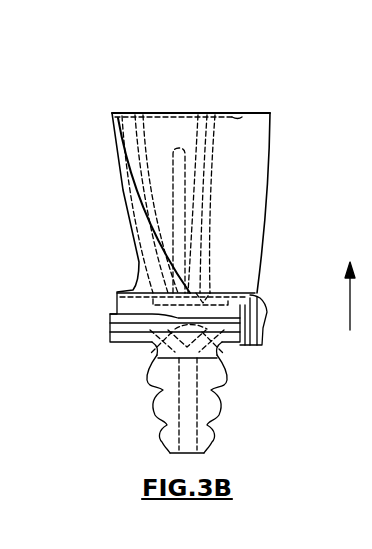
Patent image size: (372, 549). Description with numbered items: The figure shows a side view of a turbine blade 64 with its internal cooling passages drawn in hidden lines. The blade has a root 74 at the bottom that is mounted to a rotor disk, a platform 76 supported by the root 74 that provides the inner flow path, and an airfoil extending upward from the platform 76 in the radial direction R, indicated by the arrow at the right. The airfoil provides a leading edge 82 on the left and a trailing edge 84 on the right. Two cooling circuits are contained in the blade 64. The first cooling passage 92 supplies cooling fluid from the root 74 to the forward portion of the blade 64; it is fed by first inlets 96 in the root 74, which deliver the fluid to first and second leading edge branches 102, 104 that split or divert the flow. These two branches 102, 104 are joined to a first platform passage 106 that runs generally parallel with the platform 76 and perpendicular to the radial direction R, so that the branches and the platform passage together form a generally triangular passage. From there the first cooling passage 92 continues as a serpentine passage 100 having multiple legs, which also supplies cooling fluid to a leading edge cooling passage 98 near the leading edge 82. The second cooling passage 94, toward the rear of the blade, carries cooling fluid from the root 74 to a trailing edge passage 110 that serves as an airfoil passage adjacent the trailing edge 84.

The turbine blade 64 is at (100, 162).
The leading edge 82 is at (117, 138).
The trailing edge 84 is at (267, 157).
The first cooling passage 92 is at (126, 206).
The second cooling passage 94 is at (262, 212).
The leading edge cooling passage 98 is at (150, 237).
The serpentine passage 100 is at (162, 122).
The trailing edge passage 110 is at (247, 250).
The first platform passage 106 is at (114, 314).
The platform 76 is at (263, 310).
The first leading edge branch 102 is at (157, 350).
The second leading edge branch 104 is at (227, 348).
The root 74 is at (213, 409).
The first inlets 96 is at (190, 392).
The radial direction R is at (350, 312).